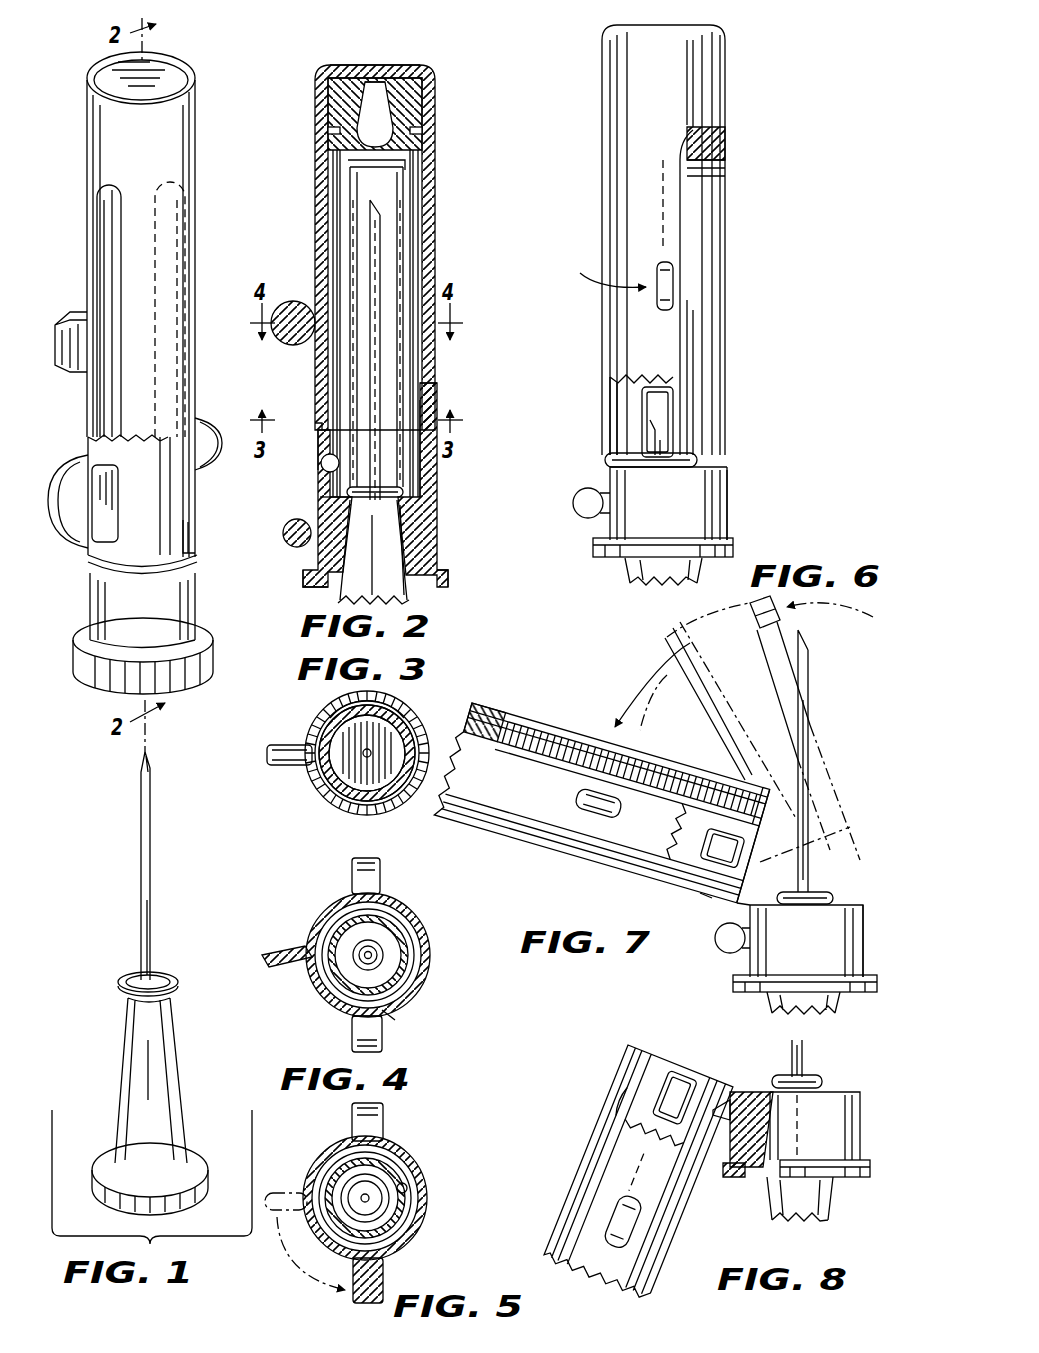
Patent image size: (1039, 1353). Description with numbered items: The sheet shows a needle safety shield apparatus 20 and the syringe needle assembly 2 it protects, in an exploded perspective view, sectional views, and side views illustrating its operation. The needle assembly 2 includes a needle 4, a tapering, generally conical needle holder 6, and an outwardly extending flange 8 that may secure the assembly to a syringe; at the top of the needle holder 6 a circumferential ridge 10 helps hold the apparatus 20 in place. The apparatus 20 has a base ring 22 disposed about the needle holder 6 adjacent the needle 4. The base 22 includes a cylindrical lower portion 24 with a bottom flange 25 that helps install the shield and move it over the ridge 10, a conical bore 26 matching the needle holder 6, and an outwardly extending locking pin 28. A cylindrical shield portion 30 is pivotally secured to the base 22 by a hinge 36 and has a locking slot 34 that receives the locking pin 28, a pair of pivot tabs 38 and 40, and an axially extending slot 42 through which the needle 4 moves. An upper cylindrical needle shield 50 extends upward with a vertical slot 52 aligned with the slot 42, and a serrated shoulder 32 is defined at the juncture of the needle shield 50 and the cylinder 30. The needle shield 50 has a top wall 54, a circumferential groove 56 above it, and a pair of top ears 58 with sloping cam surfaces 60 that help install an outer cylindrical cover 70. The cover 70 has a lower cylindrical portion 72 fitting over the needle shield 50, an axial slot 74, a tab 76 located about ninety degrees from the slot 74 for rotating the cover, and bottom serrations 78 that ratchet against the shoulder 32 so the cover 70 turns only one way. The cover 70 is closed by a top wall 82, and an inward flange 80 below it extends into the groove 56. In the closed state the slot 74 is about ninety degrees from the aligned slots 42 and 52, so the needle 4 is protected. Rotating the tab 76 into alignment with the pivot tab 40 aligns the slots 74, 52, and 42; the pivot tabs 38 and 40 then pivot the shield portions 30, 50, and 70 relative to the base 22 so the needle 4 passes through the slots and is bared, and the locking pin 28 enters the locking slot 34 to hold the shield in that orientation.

In FIG. 1, the syringe needle assembly 2 is at (149, 983).
In FIG. 2, the syringe needle assembly 2 is at (416, 403).
In FIG. 6, the syringe needle assembly 2 is at (650, 443).
In FIG. 8, the syringe needle assembly 2 is at (823, 1143).
In FIG. 1, the needle 4 is at (153, 910).
In FIG. 2, the needle 4 is at (373, 265).
In FIG. 3, the needle 4 is at (368, 757).
In FIG. 4, the needle 4 is at (366, 958).
In FIG. 5, the needle 4 is at (369, 1196).
In FIG. 7, the needle 4 is at (808, 693).
In FIG. 8, the needle 4 is at (803, 1050).
In FIG. 1, the needle holder 6 is at (178, 1063).
In FIG. 2, the needle holder 6 is at (400, 593).
In FIG. 4, the needle holder 6 is at (412, 992).
In FIG. 5, the needle holder 6 is at (323, 1190).
In FIG. 6, the needle holder 6 is at (627, 563).
In FIG. 8, the needle holder 6 is at (833, 1200).
In FIG. 1, the outwardly extending flange 8 is at (195, 1157).
In FIG. 1, the outwardly extending ridge 10 is at (110, 985).
In FIG. 2, the outwardly extending ridge 10 is at (417, 492).
In FIG. 6, the outwardly extending ridge 10 is at (727, 453).
In FIG. 7, the outwardly extending ridge 10 is at (833, 895).
In FIG. 8, the outwardly extending ridge 10 is at (825, 1082).
In FIG. 1, the needle safety shield apparatus 20 is at (143, 358).
In FIG. 2, the needle safety shield apparatus 20 is at (376, 310).
In FIG. 1, the base ring 22 is at (203, 590).
In FIG. 2, the base ring 22 is at (445, 517).
In FIG. 6, the base ring 22 is at (733, 476).
In FIG. 7, the base ring 22 is at (738, 961).
In FIG. 2, the cylindrical lower portion 24 is at (328, 553).
In FIG. 6, the cylindrical lower portion 24 is at (730, 500).
In FIG. 7, the cylindrical lower portion 24 is at (880, 967).
In FIG. 8, the cylindrical lower portion 24 is at (863, 1120).
In FIG. 1, the outwardly extending flange 25 is at (203, 625).
In FIG. 2, the outwardly extending flange 25 is at (447, 573).
In FIG. 6, the outwardly extending flange 25 is at (733, 535).
In FIG. 7, the outwardly extending flange 25 is at (733, 983).
In FIG. 8, the outwardly extending flange 25 is at (870, 1167).
In FIG. 2, the bore 26 is at (403, 553).
In FIG. 2, the locking pin 28 is at (290, 537).
In FIG. 6, the locking pin 28 is at (578, 493).
In FIG. 7, the locking pin 28 is at (717, 947).
In FIG. 1, the cylindrical shield portion 30 is at (88, 447).
In FIG. 2, the cylindrical shield portion 30 is at (318, 477).
In FIG. 2, the shoulder 32 is at (433, 385).
In FIG. 4, the shoulder 32 is at (382, 1007).
In FIG. 6, the shoulder 32 is at (623, 377).
In FIG. 8, the shoulder 32 is at (627, 1133).
In FIG. 2, the locking slot 34 is at (323, 463).
In FIG. 6, the locking slot 34 is at (617, 420).
In FIG. 7, the locking slot 34 is at (707, 895).
In FIG. 2, the hinge 36 is at (320, 497).
In FIG. 5, the hinge 36 is at (383, 1117).
In FIG. 7, the hinge 36 is at (743, 907).
In FIG. 8, the hinge 36 is at (753, 1090).
In FIG. 1, the pivot tab 38 is at (212, 473).
In FIG. 4, the pivot tab 38 is at (380, 866).
In FIG. 1, the pivot tab 40 is at (80, 542).
In FIG. 4, the pivot tab 40 is at (352, 1043).
In FIG. 5, the pivot tab 40 is at (383, 1277).
In FIG. 6, the pivot tab 40 is at (643, 440).
In FIG. 7, the pivot tab 40 is at (757, 847).
In FIG. 8, the pivot tab 40 is at (680, 1073).
In FIG. 1, the axially extending slot 42 is at (183, 537).
In FIG. 2, the axially extending slot 42 is at (437, 468).
In FIG. 6, the axially extending slot 42 is at (727, 400).
In FIG. 7, the axially extending slot 42 is at (758, 790).
In FIG. 2, the upper cylindrical needle shield 50 is at (407, 180).
In FIG. 3, the upper cylindrical needle shield 50 is at (332, 708).
In FIG. 4, the upper cylindrical needle shield 50 is at (330, 923).
In FIG. 7, the upper cylindrical needle shield 50 is at (472, 723).
In FIG. 1, the vertical slot 52 is at (190, 228).
In FIG. 2, the vertical slot 52 is at (410, 237).
In FIG. 3, the vertical slot 52 is at (427, 760).
In FIG. 4, the vertical slot 52 is at (432, 950).
In FIG. 5, the vertical slot 52 is at (423, 1183).
In FIG. 6, the vertical slot 52 is at (700, 190).
In FIG. 7, the vertical slot 52 is at (550, 727).
In FIG. 2, the top wall 54 is at (360, 170).
In FIG. 3, the top wall 54 is at (317, 735).
In FIG. 2, the circumferentially extending groove 56 is at (417, 137).
In FIG. 2, the top ears 58 is at (417, 92).
In FIG. 2, the sloping cam surfaces 60 is at (342, 85).
In FIG. 1, the outer cylindrical cover 70 is at (198, 115).
In FIG. 2, the outer cylindrical cover 70 is at (306, 172).
In FIG. 6, the outer cylindrical cover 70 is at (596, 80).
In FIG. 8, the outer cylindrical cover 70 is at (574, 1180).
In FIG. 2, the lower cylindrical portion 72 is at (317, 207).
In FIG. 4, the lower cylindrical portion 72 is at (415, 905).
In FIG. 7, the lower cylindrical portion 72 is at (475, 705).
In FIG. 1, the axially extending slot 74 is at (100, 225).
In FIG. 3, the axially extending slot 74 is at (373, 693).
In FIG. 4, the axially extending slot 74 is at (352, 1025).
In FIG. 5, the axially extending slot 74 is at (423, 1213).
In FIG. 6, the axially extending slot 74 is at (725, 237).
In FIG. 7, the axially extending slot 74 is at (557, 733).
In FIG. 1, the tab 76 is at (55, 347).
In FIG. 2, the tab 76 is at (300, 301).
In FIG. 3, the tab 76 is at (285, 772).
In FIG. 5, the tab 76 is at (367, 1292).
In FIG. 6, the tab 76 is at (653, 297).
In FIG. 7, the tab 76 is at (610, 820).
In FIG. 8, the tab 76 is at (615, 1195).
In FIG. 2, the serrations 78 is at (320, 428).
In FIG. 3, the serrations 78 is at (337, 813).
In FIG. 8, the serrations 78 is at (620, 1107).
In FIG. 2, the flange 80 is at (320, 140).
In FIG. 1, the top wall 82 is at (163, 60).
In FIG. 2, the top wall 82 is at (387, 65).